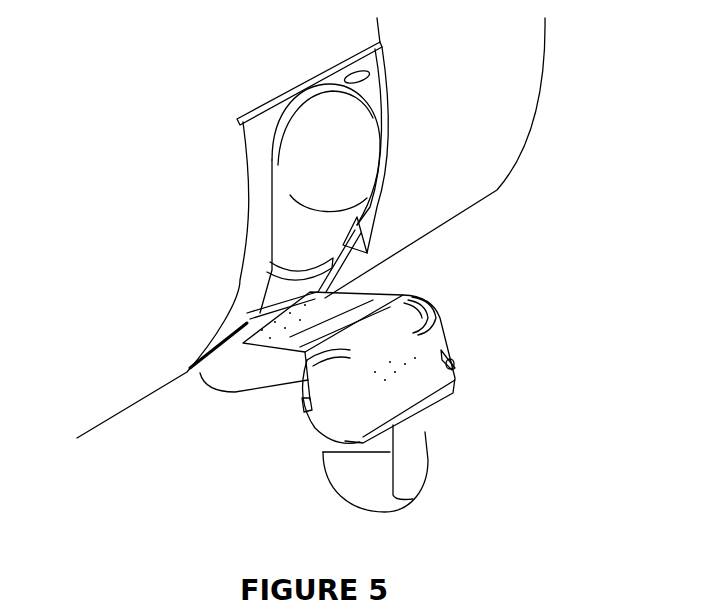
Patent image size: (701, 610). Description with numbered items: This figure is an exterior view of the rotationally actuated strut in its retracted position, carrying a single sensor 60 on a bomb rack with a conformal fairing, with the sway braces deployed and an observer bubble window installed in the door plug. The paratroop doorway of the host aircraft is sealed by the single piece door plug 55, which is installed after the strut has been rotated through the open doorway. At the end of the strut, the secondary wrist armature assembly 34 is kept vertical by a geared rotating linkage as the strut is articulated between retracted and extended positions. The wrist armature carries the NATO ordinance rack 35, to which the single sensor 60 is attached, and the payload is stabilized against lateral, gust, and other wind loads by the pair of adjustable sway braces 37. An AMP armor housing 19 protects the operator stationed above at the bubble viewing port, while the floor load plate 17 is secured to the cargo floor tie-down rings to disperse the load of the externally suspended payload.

The AMP armor housing 19 is at (460, 153).
The single piece door plug 55 is at (258, 207).
The floor load plate 17 is at (272, 372).
The secondary wrist armature assembly 34 is at (432, 313).
The adjustable sway braces 37 is at (453, 360).
The NATO ordinance rack 35 is at (325, 417).
The single sensor 60 is at (365, 492).